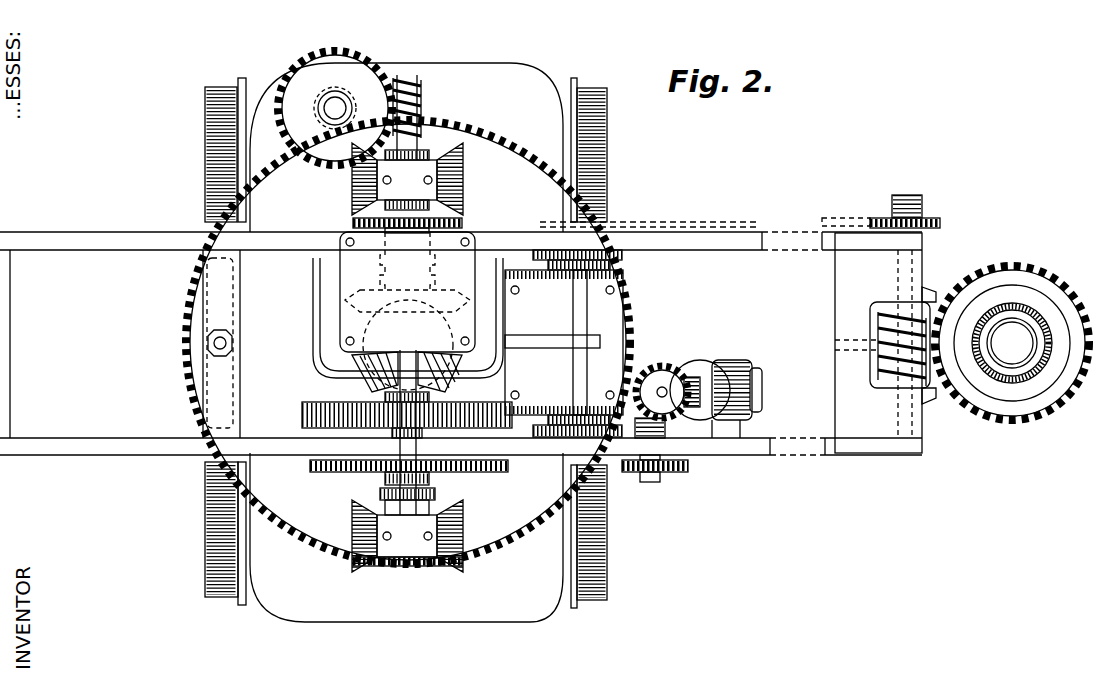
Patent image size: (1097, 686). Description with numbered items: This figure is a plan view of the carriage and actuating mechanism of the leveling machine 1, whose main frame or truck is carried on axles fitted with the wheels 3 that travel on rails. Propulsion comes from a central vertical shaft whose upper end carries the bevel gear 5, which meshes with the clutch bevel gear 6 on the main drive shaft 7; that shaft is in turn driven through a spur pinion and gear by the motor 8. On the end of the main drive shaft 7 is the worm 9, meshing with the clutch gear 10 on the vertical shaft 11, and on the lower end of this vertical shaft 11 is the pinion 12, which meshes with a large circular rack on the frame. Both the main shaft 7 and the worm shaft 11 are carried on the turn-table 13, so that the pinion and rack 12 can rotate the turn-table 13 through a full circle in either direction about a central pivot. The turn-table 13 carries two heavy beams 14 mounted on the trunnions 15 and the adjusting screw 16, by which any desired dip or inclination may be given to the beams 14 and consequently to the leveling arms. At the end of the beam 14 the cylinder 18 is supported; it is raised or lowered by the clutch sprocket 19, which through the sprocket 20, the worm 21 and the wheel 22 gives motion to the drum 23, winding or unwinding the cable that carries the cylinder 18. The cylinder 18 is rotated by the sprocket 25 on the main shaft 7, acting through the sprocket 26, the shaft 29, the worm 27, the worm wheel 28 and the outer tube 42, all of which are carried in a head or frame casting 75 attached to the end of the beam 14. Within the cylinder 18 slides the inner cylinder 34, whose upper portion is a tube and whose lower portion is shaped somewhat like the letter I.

The leveling machine 1 is at (412, 606).
The wheels 3 is at (207, 142).
The bevel gear 5 is at (440, 375).
The clutch bevel gear 6 is at (372, 300).
The main drive shaft 7 is at (415, 152).
The motor 8 is at (408, 305).
The worm 9 is at (420, 88).
The clutch gear 10 is at (300, 70).
The vertical shaft 11 is at (318, 106).
The pinion 12 is at (340, 90).
The turn-table 13 is at (408, 342).
The beams 14 is at (70, 232).
The trunnions 15 is at (540, 410).
The adjusting screw 16 is at (233, 343).
The cylinder 18 is at (1008, 372).
The clutch sprocket 19 is at (482, 472).
The sprocket 20 is at (688, 468).
The worm 21 is at (650, 368).
The wheel 22 is at (670, 372).
The drum 23 is at (738, 368).
The sprocket 25 is at (358, 218).
The sprocket 26 is at (942, 222).
The worm 27 is at (894, 380).
The worm wheel 28 is at (1040, 272).
The shaft 29 is at (910, 428).
The inner cylinder 34 is at (1012, 343).
The outer tube 42 is at (1020, 368).
The head or frame casting 75 is at (932, 286).